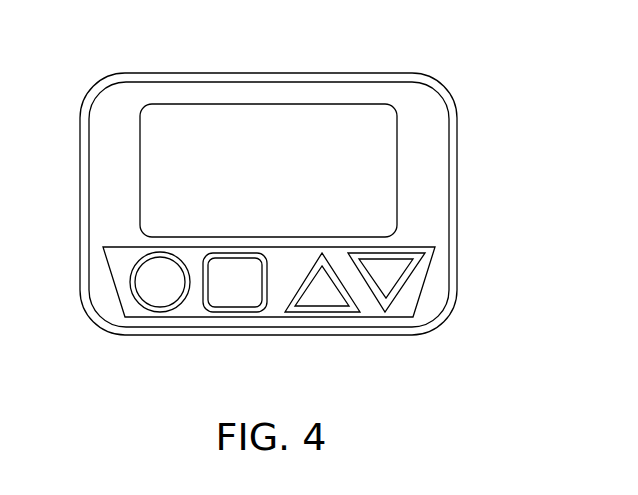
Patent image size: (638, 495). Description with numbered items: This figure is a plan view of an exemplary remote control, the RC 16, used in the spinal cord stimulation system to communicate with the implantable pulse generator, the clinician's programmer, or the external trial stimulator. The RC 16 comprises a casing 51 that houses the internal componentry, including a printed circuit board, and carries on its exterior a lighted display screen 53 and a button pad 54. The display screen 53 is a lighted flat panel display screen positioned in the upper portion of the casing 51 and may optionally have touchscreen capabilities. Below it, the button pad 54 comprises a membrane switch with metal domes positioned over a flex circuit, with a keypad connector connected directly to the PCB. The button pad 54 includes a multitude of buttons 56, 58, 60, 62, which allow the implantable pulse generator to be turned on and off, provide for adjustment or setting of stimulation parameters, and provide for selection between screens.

The remote control (RC) 16 is at (443, 85).
The casing 51 is at (433, 160).
The display screen 53 is at (285, 118).
The button pad 54 is at (122, 265).
The button 56 is at (162, 295).
The button 58 is at (245, 297).
The button 60 is at (330, 295).
The button 62 is at (388, 285).